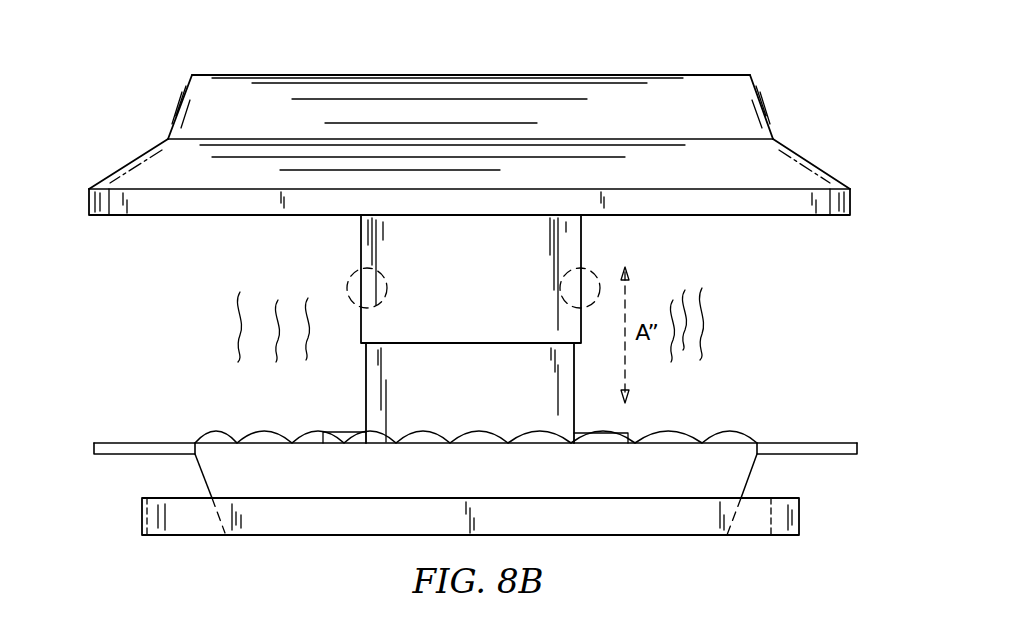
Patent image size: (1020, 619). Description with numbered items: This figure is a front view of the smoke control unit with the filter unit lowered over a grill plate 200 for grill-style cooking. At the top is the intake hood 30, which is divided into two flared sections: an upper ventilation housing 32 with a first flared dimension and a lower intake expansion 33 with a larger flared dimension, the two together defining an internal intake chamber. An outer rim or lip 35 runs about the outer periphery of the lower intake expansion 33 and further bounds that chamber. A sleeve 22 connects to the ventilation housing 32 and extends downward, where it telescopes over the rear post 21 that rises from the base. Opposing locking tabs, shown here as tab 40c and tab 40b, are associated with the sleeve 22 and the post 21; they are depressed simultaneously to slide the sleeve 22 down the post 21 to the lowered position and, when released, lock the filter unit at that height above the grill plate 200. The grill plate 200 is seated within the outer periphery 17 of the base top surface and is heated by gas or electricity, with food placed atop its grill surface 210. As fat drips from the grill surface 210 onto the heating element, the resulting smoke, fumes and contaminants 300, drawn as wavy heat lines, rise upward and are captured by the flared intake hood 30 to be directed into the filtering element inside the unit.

The intake hood 30 is at (700, 80).
The ventilation housing 32 is at (190, 103).
The lower intake expansion 33 is at (142, 168).
The outer rim or lip 35 is at (122, 212).
The sleeve 22 is at (456, 311).
The rear post 21 is at (456, 406).
The corner region 40c is at (365, 287).
The locking tab 40b is at (578, 287).
The contaminants 300 is at (240, 332).
The grill surface 210 is at (265, 433).
The grill plate 200 is at (210, 469).
The outer periphery 17 is at (492, 524).